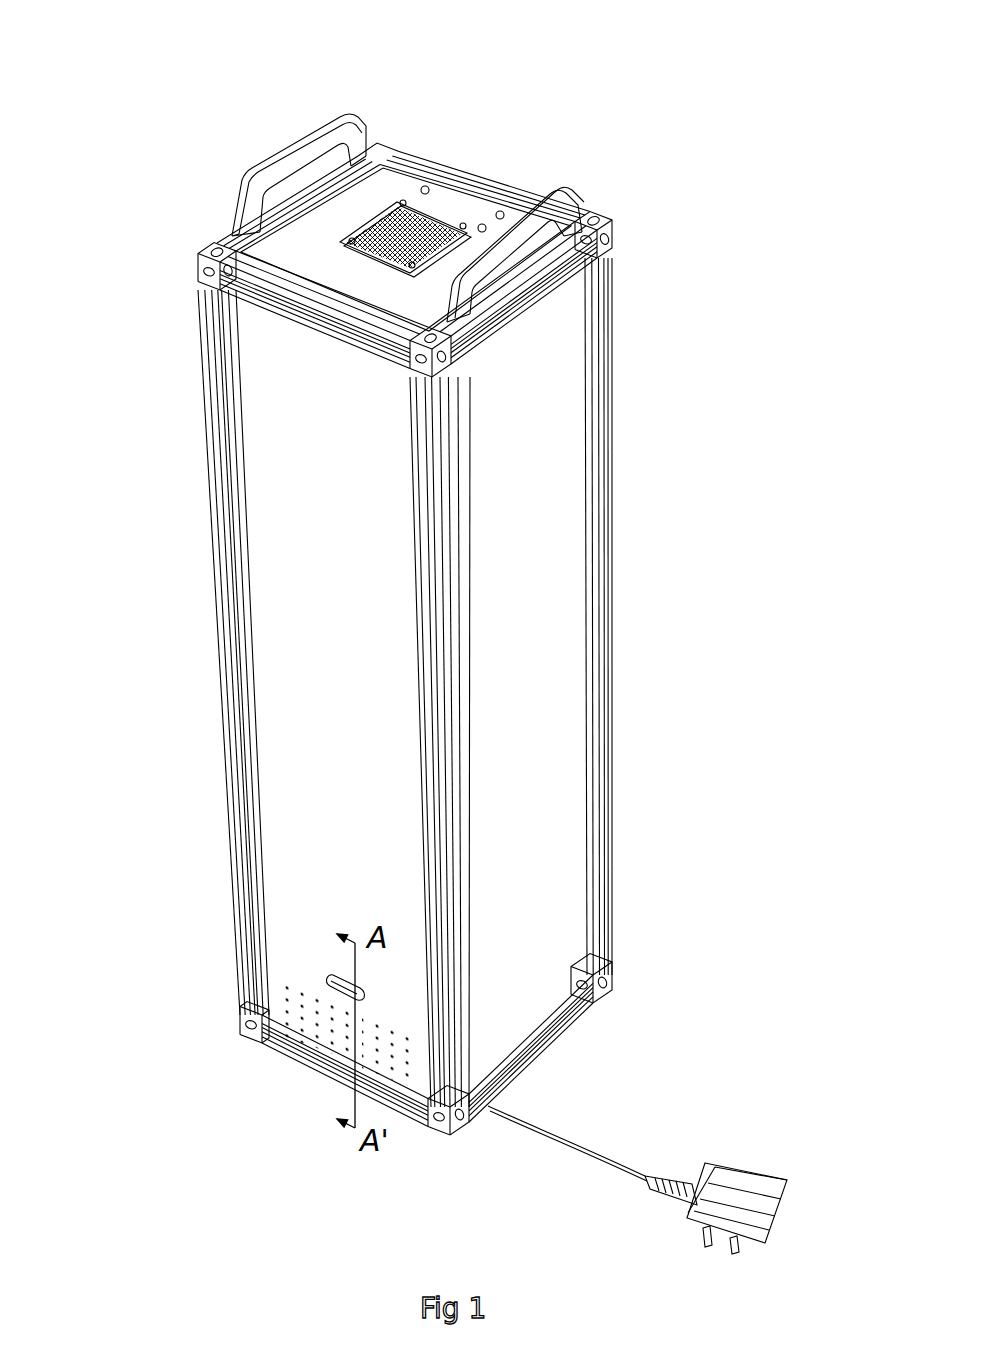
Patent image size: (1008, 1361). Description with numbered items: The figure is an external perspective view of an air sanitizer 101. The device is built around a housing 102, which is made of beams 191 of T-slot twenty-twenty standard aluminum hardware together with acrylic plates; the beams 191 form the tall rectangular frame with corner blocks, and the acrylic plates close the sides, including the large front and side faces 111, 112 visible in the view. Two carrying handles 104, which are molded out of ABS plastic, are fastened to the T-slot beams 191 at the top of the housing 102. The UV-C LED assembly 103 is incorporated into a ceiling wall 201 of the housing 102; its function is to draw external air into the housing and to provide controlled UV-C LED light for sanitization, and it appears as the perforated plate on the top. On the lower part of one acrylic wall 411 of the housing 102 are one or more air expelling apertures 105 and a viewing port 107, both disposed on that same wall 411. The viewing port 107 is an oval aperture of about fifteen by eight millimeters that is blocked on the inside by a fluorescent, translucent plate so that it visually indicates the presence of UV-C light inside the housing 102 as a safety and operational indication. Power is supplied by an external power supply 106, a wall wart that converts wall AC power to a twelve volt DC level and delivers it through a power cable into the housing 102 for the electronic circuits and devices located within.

The air sanitizer 101 is at (165, 33).
The housing 102 is at (205, 402).
The UV-C LED assembly 103 is at (333, 220).
The carrying handles 104 is at (245, 170).
The ceiling wall 201 is at (487, 182).
The front side panel 111 is at (268, 545).
The right side panel 112 is at (553, 457).
The beams 191 is at (605, 692).
The acrylic wall 411 is at (372, 851).
The viewing port 107 is at (330, 972).
The apertures 105 is at (347, 1032).
The external power supply 106 is at (733, 1180).